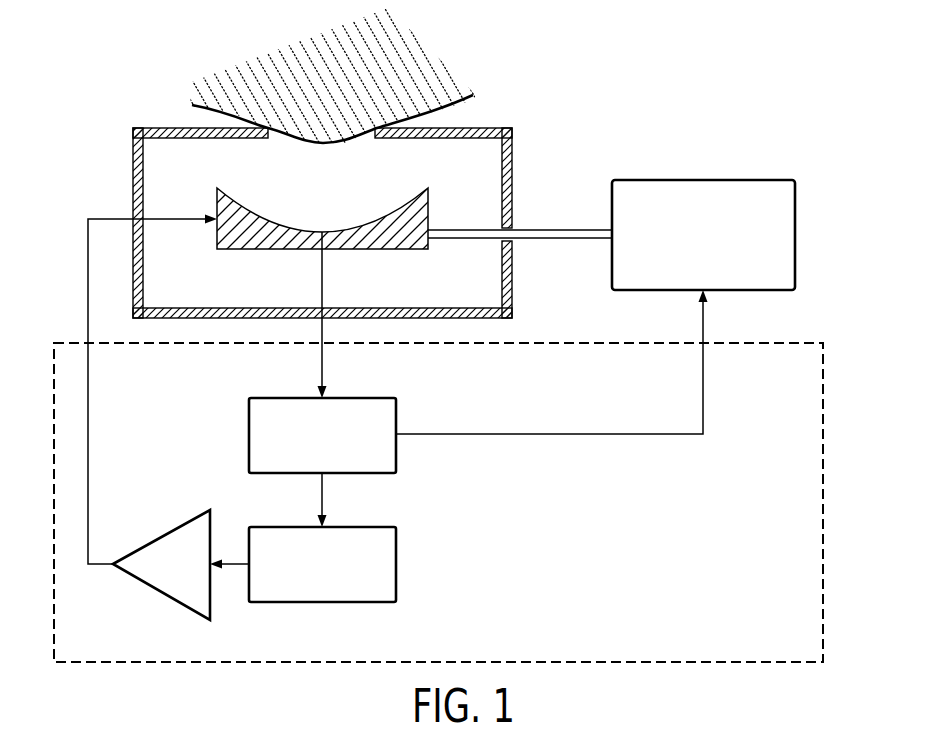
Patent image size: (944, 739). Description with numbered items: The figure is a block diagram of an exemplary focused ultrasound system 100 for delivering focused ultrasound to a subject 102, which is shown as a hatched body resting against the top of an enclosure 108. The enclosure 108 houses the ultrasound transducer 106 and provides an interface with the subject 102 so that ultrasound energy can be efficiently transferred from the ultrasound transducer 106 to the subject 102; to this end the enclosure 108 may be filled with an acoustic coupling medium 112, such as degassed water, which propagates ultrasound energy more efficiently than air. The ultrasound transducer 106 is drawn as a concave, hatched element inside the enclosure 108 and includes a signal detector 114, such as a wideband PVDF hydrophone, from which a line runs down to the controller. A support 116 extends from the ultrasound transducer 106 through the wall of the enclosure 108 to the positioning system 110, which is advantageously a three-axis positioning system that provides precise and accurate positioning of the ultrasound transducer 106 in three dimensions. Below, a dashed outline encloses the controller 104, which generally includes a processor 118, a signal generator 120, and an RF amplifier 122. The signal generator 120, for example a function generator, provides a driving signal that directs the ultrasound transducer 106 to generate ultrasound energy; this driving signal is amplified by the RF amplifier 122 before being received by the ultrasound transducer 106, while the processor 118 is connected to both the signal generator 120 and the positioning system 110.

The focused ultrasound system 100 is at (600, 78).
The subject 102 is at (367, 76).
The controller 104 is at (823, 424).
The ultrasound transducer 106 is at (257, 250).
The enclosure 108 is at (513, 153).
The positioning system 110 is at (703, 180).
The acoustic coupling medium 112 is at (208, 174).
The signal detector 114 is at (322, 232).
The support 116 is at (527, 229).
The processor 118 is at (249, 434).
The signal generator 120 is at (396, 564).
The RF amplifier 122 is at (176, 600).